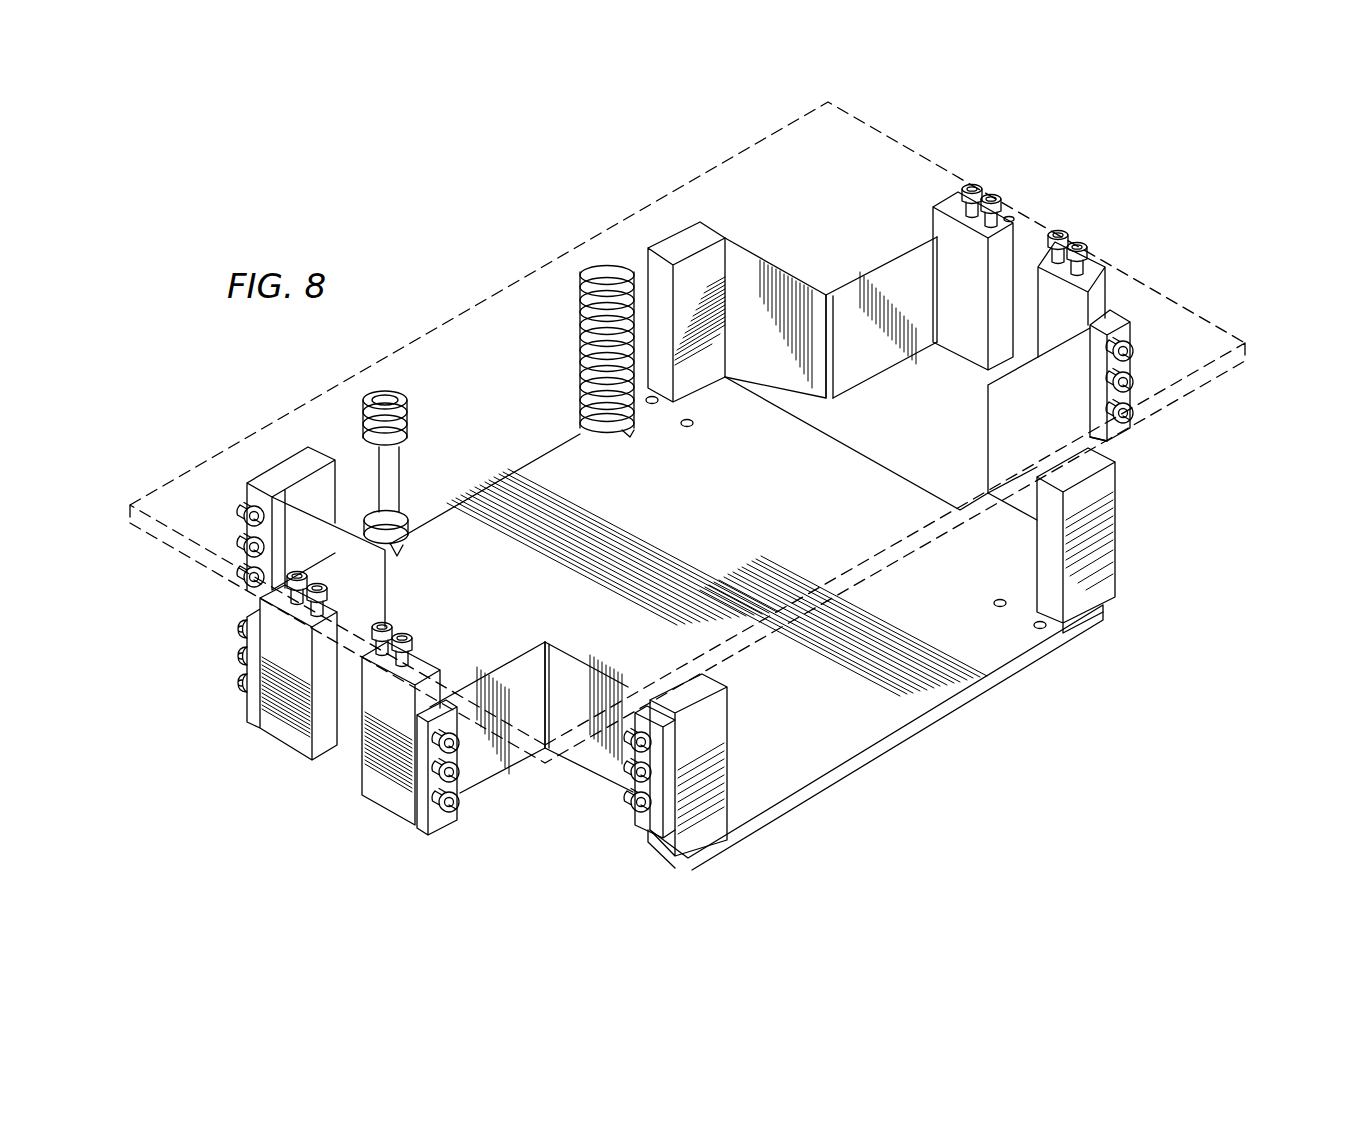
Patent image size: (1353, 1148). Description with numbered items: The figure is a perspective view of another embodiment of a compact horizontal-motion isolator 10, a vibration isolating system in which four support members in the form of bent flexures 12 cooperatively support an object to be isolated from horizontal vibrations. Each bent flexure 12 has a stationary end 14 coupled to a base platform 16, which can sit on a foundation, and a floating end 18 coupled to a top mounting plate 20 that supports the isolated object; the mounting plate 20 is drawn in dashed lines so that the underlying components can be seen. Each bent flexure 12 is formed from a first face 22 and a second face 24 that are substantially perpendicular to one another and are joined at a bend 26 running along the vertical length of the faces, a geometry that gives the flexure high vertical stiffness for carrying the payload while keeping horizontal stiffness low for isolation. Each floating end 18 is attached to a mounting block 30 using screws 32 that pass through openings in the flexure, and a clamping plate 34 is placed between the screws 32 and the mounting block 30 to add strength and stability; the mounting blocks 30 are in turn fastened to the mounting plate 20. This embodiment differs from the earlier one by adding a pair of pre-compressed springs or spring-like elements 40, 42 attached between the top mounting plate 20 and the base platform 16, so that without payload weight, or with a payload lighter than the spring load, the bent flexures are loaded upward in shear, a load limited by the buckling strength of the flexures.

The compact horizontal-motion isolator 10 is at (473, 263).
The bent flexure 12 is at (806, 306).
The stationary end 14 is at (730, 321).
The base platform 16 is at (803, 748).
The floating end 18 is at (1110, 306).
The top mounting plate 20 is at (843, 523).
The first face 22 is at (865, 351).
The second face 24 is at (810, 351).
The bend 26 is at (834, 330).
The mounting block 30 is at (660, 268).
The screw 32 is at (1069, 239).
The clamping plate 34 is at (428, 805).
The pre-compressed spring 40 is at (588, 363).
The pre-compressed spring-like element 42 is at (410, 429).